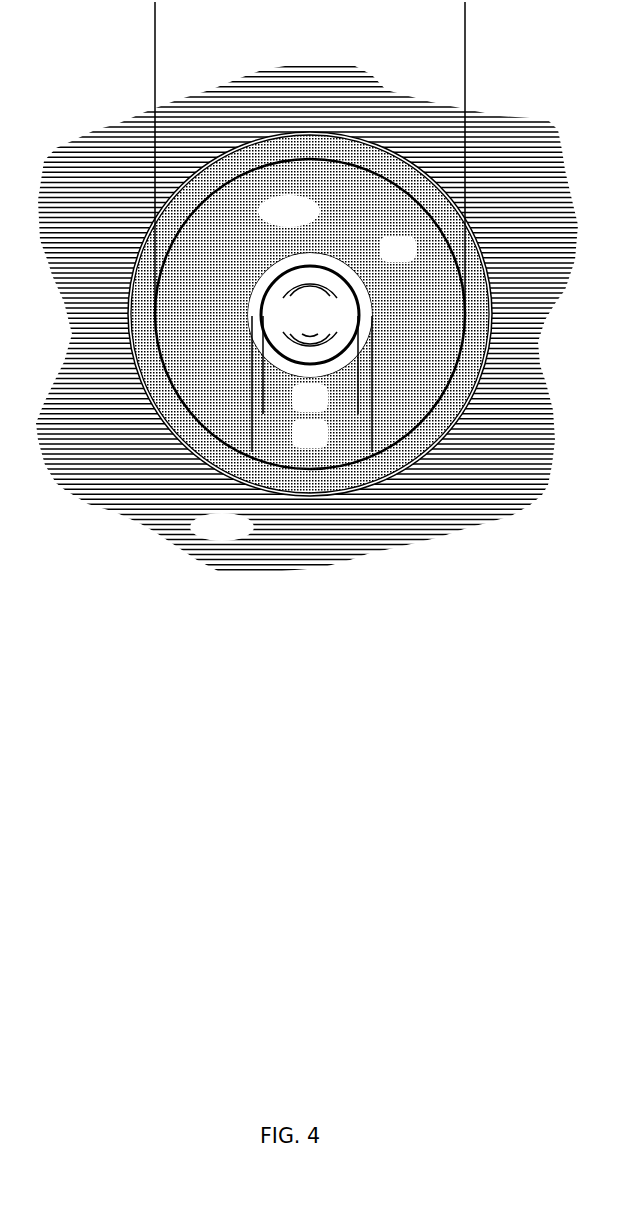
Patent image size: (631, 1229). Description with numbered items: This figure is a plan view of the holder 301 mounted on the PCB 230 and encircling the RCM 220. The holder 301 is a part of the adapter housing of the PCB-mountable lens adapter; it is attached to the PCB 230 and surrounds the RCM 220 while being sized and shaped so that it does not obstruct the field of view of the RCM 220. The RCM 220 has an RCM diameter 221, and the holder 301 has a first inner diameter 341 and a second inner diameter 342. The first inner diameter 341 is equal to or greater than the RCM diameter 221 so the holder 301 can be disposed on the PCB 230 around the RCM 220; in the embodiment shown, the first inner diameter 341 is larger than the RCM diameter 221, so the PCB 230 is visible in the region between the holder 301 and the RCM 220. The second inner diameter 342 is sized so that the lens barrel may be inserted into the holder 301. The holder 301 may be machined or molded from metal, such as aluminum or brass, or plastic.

The RCM 220 is at (295, 326).
The RCM diameter 221 is at (358, 405).
The PCB 230 is at (333, 258).
The holder 301 is at (274, 220).
The first inner diameter 341 is at (372, 438).
The second inner diameter 342 is at (155, 27).